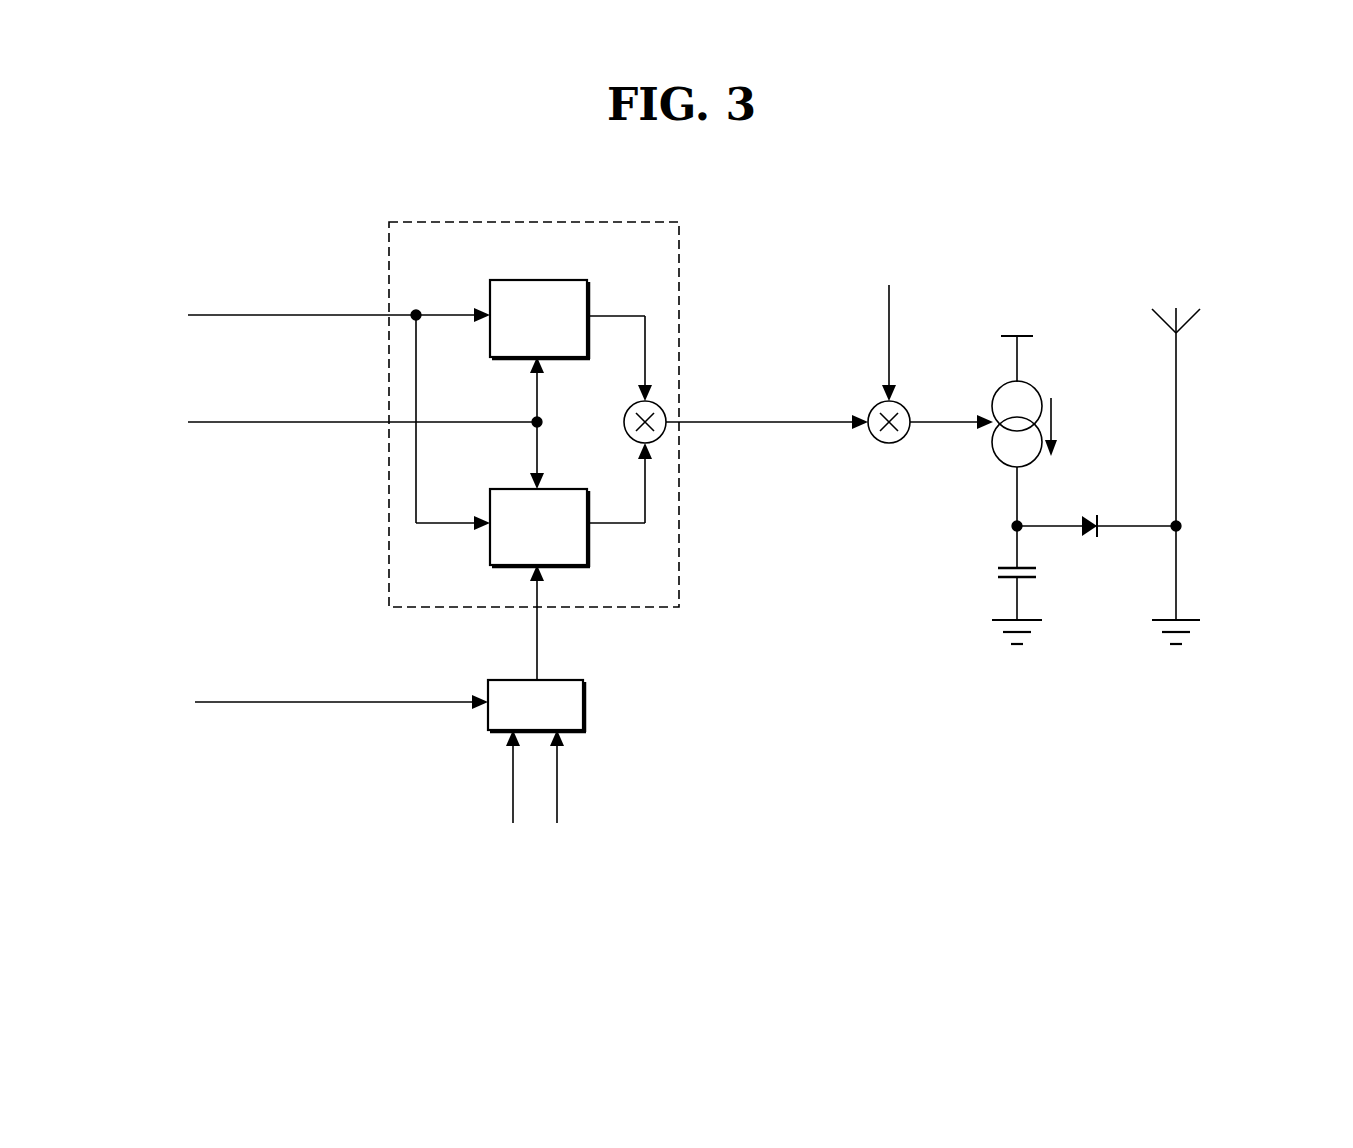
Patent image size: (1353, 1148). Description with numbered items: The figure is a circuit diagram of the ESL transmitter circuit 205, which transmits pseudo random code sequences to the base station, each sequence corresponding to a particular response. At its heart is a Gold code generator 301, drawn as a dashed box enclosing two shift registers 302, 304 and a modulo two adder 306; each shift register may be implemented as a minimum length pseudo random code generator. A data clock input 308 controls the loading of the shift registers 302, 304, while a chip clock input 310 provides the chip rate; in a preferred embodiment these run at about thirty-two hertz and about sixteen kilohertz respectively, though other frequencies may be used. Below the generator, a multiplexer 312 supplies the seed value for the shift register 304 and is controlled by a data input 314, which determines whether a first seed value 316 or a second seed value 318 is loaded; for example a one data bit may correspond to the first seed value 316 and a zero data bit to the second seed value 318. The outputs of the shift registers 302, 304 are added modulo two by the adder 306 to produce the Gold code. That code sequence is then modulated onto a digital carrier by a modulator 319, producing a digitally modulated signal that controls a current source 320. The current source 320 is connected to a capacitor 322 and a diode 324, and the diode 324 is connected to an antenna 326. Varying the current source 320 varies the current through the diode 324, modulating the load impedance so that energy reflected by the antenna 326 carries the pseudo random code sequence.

The ESL transmitter circuit 205 is at (905, 138).
The Gold code generator 301 is at (485, 222).
The shift register 302 is at (562, 280).
The shift register 304 is at (507, 489).
The modulo 2 adder 306 is at (625, 420).
The data clock input 308 is at (205, 421).
The chip clock input 310 is at (205, 314).
The multiplexer 312 is at (567, 680).
The data input 314 is at (217, 701).
The first seed value 316 is at (513, 812).
The second seed value 318 is at (557, 812).
The modulator 319 is at (876, 444).
The current source 320 is at (1000, 386).
The capacitor 322 is at (1008, 566).
The diode 324 is at (1091, 508).
The antenna 326 is at (1190, 318).